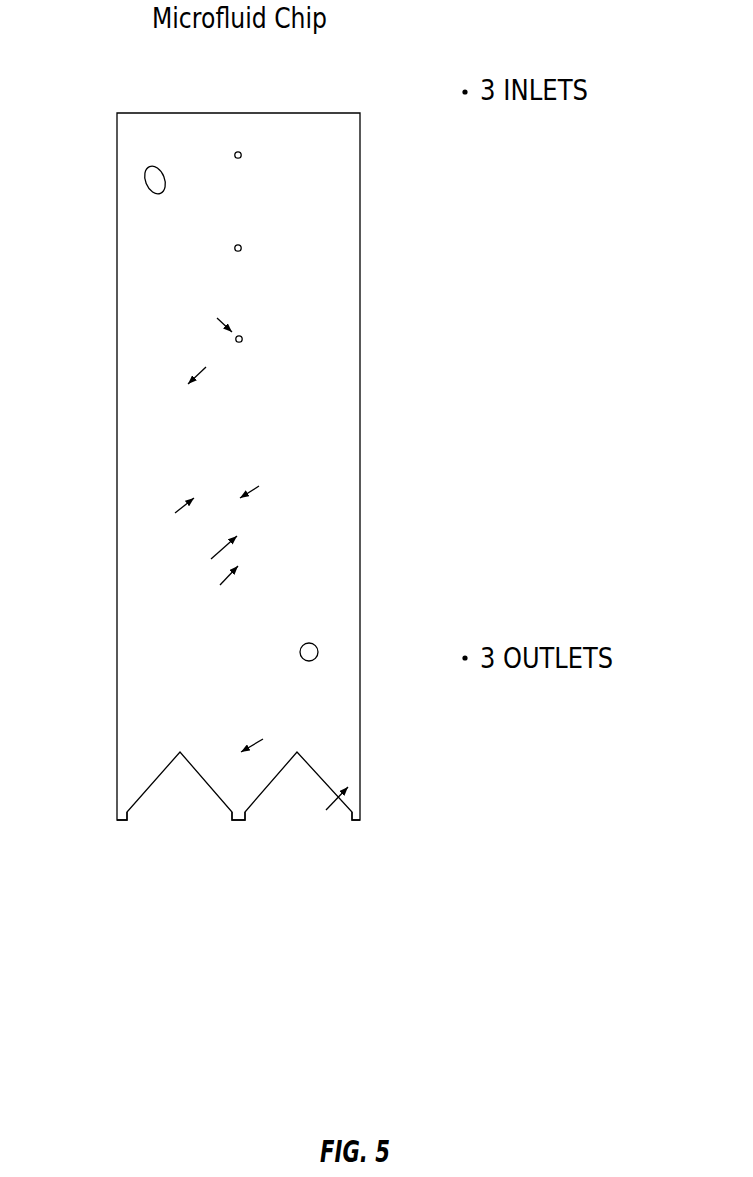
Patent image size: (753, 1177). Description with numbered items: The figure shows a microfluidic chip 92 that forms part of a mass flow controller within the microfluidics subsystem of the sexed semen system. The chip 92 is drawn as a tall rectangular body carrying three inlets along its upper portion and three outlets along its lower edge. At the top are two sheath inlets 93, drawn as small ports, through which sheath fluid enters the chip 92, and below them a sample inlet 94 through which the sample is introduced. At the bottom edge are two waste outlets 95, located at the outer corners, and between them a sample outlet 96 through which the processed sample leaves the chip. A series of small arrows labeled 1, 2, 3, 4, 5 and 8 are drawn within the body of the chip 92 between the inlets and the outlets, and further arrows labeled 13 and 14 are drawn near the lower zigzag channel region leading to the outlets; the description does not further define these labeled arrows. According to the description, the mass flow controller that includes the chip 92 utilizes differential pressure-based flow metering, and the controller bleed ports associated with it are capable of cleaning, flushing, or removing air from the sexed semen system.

The microfluidic chip 92 is at (115, 76).
The sheath inlets 93 is at (245, 246).
The sample inlet 94 is at (620, 247).
The waste outlets 95 is at (350, 816).
The sample outlet 96 is at (620, 708).
The flow direction arrow 1 is at (220, 315).
The flow direction arrow 2 is at (204, 365).
The flow direction arrow 3 is at (256, 482).
The flow direction arrow 4 is at (177, 514).
The flow direction arrow 5 is at (222, 586).
The flow direction arrow 8 is at (216, 558).
The flow direction arrow 13 is at (264, 736).
The flow direction arrow 14 is at (326, 809).